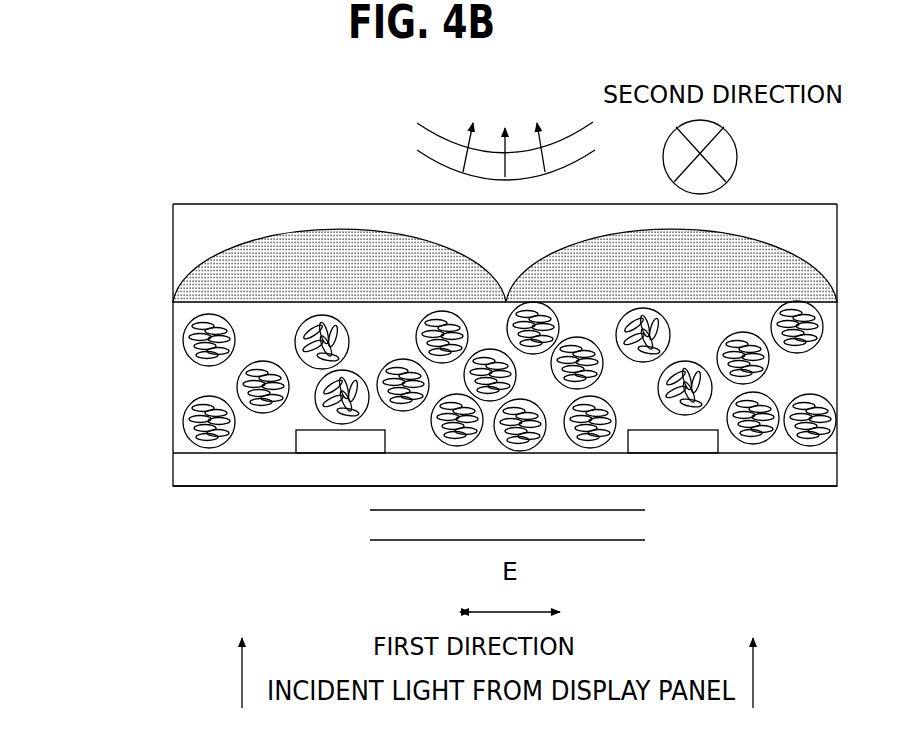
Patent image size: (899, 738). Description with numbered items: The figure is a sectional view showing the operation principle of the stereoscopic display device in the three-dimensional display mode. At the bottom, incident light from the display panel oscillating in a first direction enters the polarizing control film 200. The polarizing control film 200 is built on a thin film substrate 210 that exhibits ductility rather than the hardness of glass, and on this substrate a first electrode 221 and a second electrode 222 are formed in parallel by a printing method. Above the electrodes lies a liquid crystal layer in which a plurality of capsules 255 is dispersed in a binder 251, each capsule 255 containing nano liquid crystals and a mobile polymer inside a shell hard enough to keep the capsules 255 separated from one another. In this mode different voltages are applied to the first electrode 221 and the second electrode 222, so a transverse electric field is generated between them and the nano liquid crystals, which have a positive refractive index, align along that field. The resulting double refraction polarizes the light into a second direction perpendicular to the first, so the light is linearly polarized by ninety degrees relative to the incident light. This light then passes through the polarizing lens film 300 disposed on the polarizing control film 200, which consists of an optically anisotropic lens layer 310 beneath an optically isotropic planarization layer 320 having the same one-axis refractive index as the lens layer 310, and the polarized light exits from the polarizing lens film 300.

The polarizing lens film 300 is at (80, 215).
The planarization layer 320 is at (215, 225).
The lens layer 310 is at (215, 284).
The polarizing control film 200 is at (63, 327).
The capsule 255 is at (185, 340).
The binder 251 is at (188, 398).
The thin film substrate 210 is at (200, 473).
The first electrode 221 is at (317, 447).
The second electrode 222 is at (675, 442).